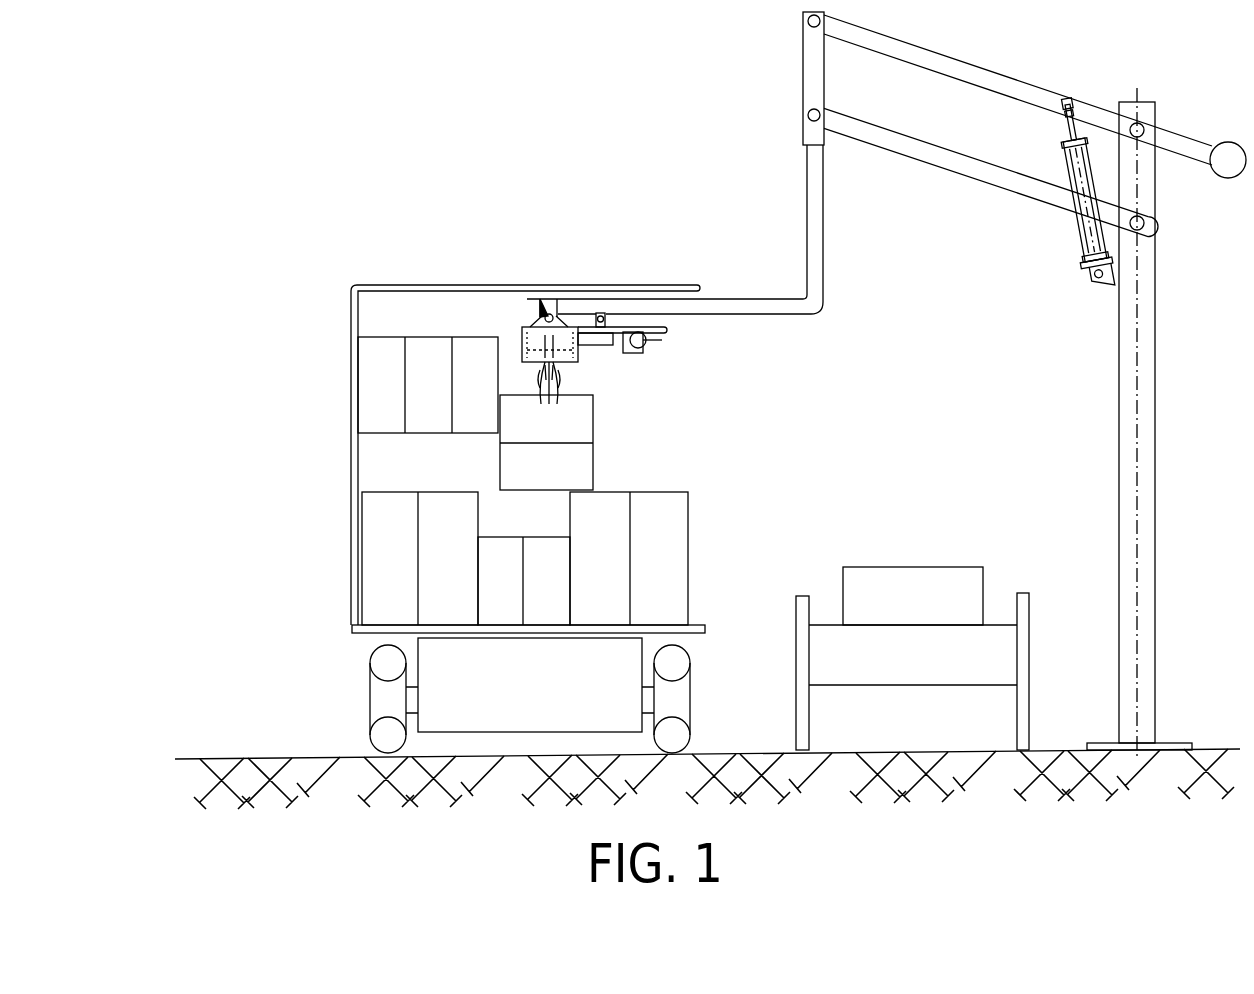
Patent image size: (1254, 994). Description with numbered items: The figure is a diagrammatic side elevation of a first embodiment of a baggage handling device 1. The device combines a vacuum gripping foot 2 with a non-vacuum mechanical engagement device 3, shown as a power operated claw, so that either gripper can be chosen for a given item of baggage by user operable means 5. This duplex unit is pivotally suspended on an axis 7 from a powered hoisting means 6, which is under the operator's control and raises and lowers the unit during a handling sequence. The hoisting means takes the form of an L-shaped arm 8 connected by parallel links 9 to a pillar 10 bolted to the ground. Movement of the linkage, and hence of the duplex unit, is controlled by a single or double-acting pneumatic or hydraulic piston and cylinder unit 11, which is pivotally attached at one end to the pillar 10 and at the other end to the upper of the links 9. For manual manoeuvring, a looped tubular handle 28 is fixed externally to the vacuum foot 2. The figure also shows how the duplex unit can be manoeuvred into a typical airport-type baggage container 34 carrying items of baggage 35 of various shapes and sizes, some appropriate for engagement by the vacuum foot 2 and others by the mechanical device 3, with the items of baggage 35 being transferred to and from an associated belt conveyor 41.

The baggage handling device 1 is at (683, 375).
The vacuum gripping foot 2 is at (517, 332).
The mechanical engagement device 3 is at (573, 380).
The user operable means 5 is at (607, 315).
The powered hoisting means 6 is at (982, 62).
The axis 7 is at (522, 275).
The L-shaped arm 8 is at (781, 316).
The parallel links 9 is at (978, 86).
The pillar 10 is at (1117, 398).
The piston and cylinder unit 11 is at (1065, 213).
The looped tubular handle 28 is at (672, 330).
The baggage container 34 is at (348, 585).
The items of baggage 35 is at (600, 424).
The belt conveyor 41 is at (1030, 598).